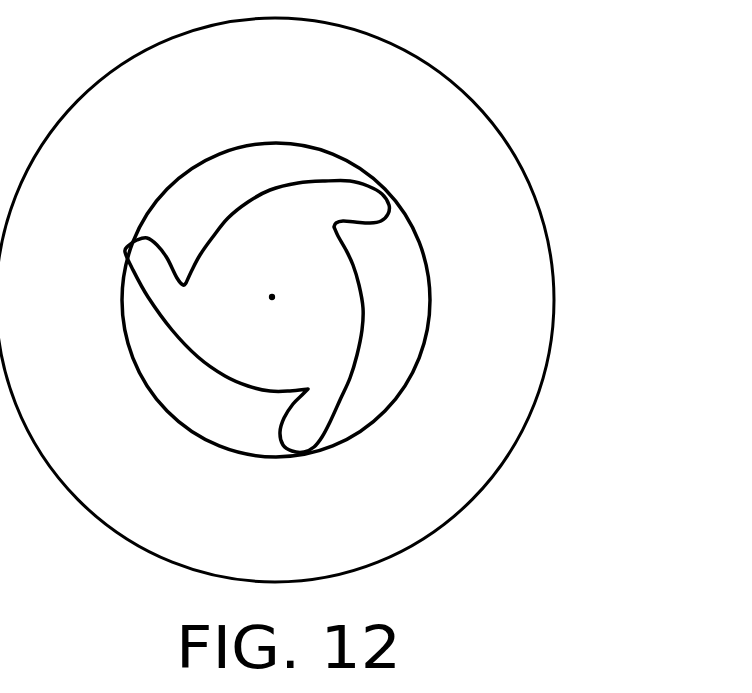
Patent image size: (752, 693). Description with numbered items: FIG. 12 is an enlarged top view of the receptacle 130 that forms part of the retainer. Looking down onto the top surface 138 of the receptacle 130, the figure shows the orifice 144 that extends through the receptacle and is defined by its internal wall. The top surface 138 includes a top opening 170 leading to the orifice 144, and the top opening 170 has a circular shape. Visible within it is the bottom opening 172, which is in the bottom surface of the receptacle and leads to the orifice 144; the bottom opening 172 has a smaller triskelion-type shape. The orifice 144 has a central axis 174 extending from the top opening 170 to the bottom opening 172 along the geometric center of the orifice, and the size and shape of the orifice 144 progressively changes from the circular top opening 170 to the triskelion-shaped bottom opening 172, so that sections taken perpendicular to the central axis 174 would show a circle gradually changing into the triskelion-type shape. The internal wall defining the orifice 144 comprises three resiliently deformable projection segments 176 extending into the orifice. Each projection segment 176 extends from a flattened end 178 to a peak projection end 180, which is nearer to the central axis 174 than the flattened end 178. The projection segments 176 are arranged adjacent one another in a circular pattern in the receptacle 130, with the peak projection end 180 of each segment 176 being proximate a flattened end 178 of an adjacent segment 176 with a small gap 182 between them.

The receptacle 130 is at (562, 147).
The top surface 138 is at (382, 540).
The orifice 144 is at (330, 287).
The top opening 170 is at (414, 232).
The bottom opening 172 is at (348, 376).
The central axis 174 is at (274, 299).
The projection segment 176 is at (243, 201).
The flattened end 178 is at (355, 180).
The peak projection end 180 is at (336, 224).
The gap 182 is at (402, 172).